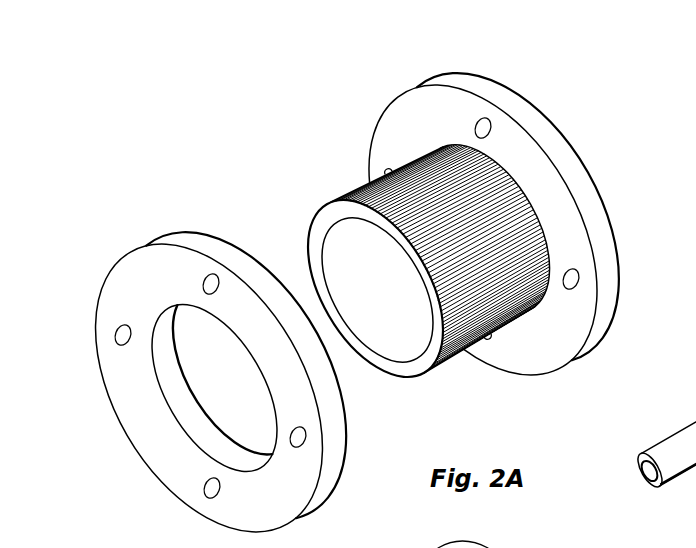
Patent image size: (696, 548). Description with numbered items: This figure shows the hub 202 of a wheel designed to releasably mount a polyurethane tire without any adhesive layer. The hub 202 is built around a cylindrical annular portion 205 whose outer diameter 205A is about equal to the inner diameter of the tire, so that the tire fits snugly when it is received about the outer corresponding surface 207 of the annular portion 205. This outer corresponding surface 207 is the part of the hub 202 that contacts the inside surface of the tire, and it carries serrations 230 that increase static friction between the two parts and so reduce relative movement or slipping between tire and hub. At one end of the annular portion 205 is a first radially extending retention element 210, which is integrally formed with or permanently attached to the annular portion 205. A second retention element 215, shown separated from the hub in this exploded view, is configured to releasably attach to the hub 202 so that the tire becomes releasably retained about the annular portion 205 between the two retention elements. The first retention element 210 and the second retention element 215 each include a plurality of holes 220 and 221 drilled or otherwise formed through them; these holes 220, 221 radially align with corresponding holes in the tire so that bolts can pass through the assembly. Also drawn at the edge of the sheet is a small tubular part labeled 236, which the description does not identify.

The hub 202 is at (337, 113).
The annular portion 205 is at (442, 251).
The outer diameter 205A is at (375, 287).
The outer corresponding surface 207 is at (353, 213).
The first radially extending retention element 210 is at (540, 356).
The second retention element 215 is at (148, 247).
The holes 220 is at (578, 279).
The holes 221 is at (208, 280).
The serrations 230 is at (487, 152).
The tube 236 is at (664, 414).